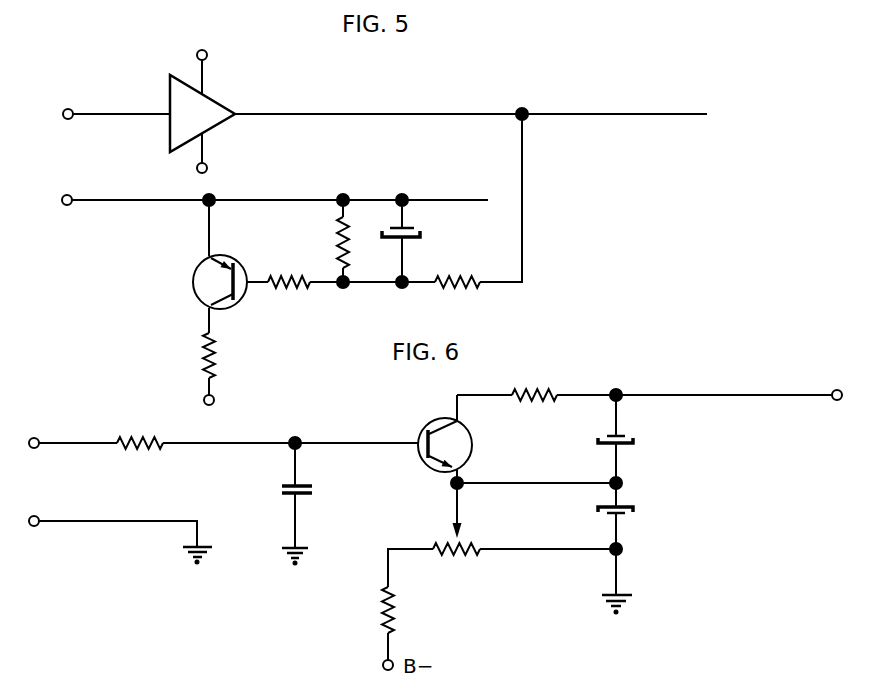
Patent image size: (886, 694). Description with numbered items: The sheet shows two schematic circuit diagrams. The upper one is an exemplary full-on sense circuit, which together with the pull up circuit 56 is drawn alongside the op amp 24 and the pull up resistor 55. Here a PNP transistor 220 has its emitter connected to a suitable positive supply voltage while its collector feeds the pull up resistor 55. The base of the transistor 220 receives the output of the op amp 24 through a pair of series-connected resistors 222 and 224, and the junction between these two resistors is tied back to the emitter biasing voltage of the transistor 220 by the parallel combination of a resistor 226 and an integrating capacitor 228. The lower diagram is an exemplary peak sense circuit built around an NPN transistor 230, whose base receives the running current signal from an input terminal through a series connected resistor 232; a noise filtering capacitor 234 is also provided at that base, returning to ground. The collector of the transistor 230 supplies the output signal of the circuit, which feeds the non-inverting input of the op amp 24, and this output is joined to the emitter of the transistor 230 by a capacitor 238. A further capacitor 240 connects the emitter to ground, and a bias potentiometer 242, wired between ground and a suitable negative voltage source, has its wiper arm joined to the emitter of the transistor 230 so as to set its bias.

In FIG. 5, the op amp 24 is at (170, 90).
In FIG. 5, the pull up resistor 55 is at (216, 352).
In FIG. 5, the pull up circuit 56 is at (606, 220).
In FIG. 5, the PNP transistor 220 is at (193, 285).
In FIG. 5, the resistor 222 is at (292, 290).
In FIG. 5, the resistor 224 is at (468, 288).
In FIG. 5, the resistor 226 is at (338, 246).
In FIG. 5, the integrating capacitor 228 is at (424, 234).
In FIG. 6, the NPN transistor 230 is at (423, 432).
In FIG. 6, the series connected resistor 232 is at (134, 440).
In FIG. 6, the noise filtering capacitor 234 is at (282, 488).
In FIG. 6, the capacitor 238 is at (636, 440).
In FIG. 6, the capacitor 240 is at (636, 508).
In FIG. 6, the bias potentiometer 242 is at (449, 553).